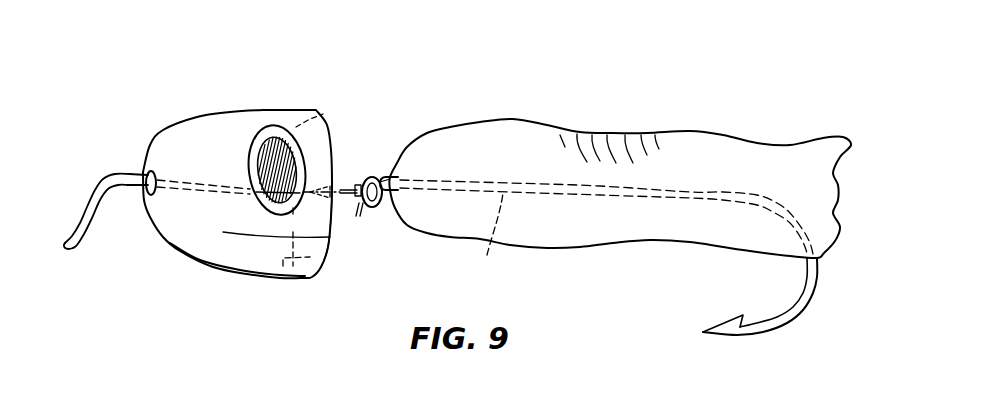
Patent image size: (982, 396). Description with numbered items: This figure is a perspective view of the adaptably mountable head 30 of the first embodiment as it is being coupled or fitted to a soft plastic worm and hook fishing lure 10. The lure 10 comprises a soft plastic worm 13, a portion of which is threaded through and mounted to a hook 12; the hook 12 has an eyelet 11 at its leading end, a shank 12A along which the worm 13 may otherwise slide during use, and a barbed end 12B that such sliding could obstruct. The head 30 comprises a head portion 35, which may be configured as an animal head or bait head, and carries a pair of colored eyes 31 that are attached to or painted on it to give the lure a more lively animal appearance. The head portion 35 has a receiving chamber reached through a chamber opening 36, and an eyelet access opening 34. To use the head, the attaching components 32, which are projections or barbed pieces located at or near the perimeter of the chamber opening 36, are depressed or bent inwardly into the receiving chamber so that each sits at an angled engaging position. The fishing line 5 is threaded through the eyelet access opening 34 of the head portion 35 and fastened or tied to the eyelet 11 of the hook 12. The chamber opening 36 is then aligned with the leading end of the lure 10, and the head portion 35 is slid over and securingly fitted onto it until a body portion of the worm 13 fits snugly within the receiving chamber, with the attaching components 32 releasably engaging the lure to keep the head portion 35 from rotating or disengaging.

The fishing line 5 is at (92, 186).
The worm and hook lure 10 is at (620, 198).
The eyelet 11 is at (380, 210).
The hook 12 is at (550, 185).
The shank 12A is at (487, 257).
The barbed end 12B is at (804, 306).
The soft plastic worm 13 is at (495, 140).
The adaptably mountable head 30 is at (213, 110).
The colored eyes 31 is at (288, 143).
The attaching components 32 is at (339, 180).
The eyelet access opening 34 is at (147, 177).
The head portion 35 is at (240, 247).
The chamber opening 36 is at (335, 243).